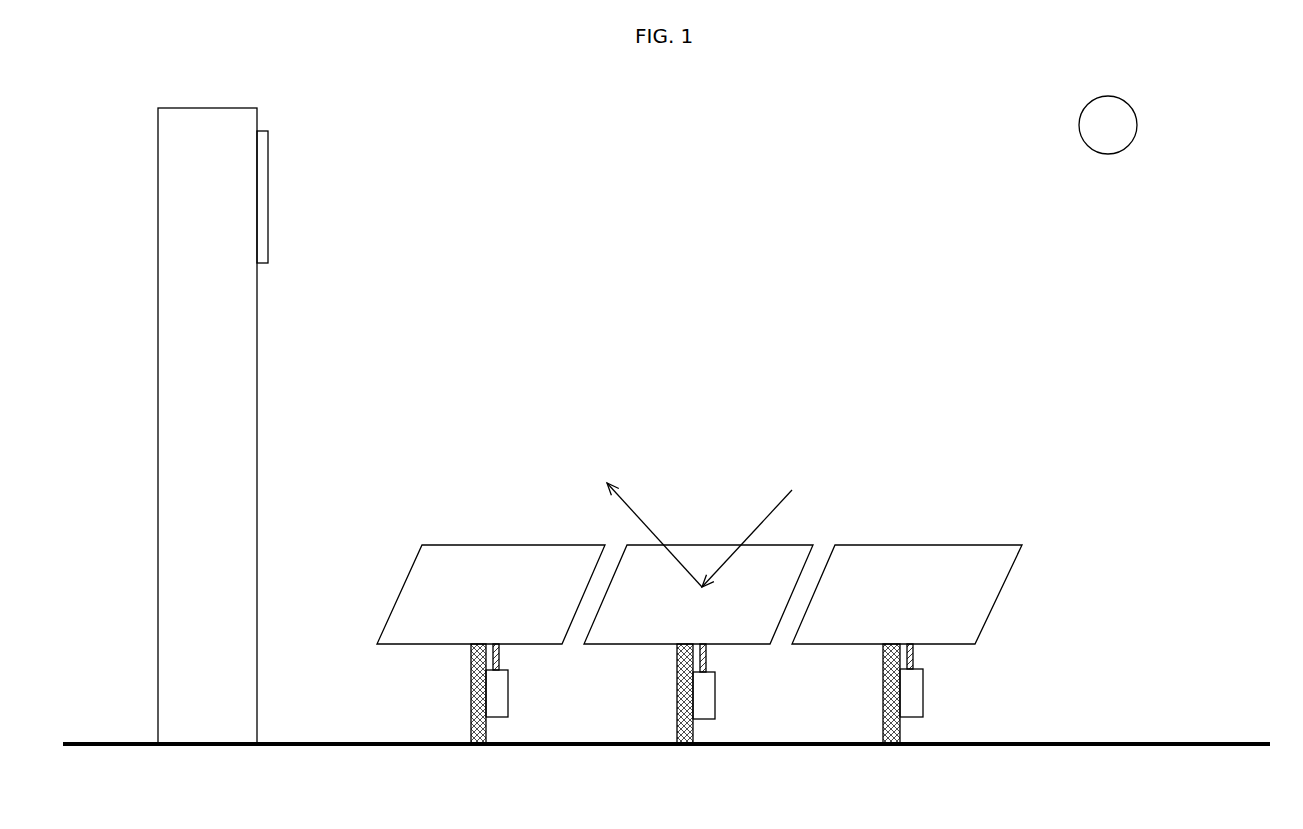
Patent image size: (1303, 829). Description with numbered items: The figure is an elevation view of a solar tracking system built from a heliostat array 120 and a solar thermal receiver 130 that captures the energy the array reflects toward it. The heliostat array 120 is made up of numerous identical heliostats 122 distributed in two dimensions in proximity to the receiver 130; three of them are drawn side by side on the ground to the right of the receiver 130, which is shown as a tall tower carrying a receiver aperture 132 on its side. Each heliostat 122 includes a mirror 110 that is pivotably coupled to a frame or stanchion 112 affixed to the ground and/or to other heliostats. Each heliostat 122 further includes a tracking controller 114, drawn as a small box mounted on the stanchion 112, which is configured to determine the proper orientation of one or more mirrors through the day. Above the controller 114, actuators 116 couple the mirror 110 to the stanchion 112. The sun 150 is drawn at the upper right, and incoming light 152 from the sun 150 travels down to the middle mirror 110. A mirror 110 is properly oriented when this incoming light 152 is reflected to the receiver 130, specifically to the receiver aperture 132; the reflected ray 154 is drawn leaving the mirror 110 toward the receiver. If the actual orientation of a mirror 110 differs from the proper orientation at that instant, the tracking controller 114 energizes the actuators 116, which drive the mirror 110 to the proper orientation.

The mirror 110 is at (699, 594).
The stanchion 112 is at (478, 750).
The tracking controller 114 is at (510, 690).
The actuators 116 is at (500, 655).
The heliostat array 120 is at (700, 432).
The heliostat 122 is at (747, 568).
The receiver 130 is at (258, 392).
The receiver aperture 132 is at (271, 163).
The sun 150 is at (1110, 165).
The incoming light 152 is at (759, 524).
The reflected light 154 is at (643, 523).